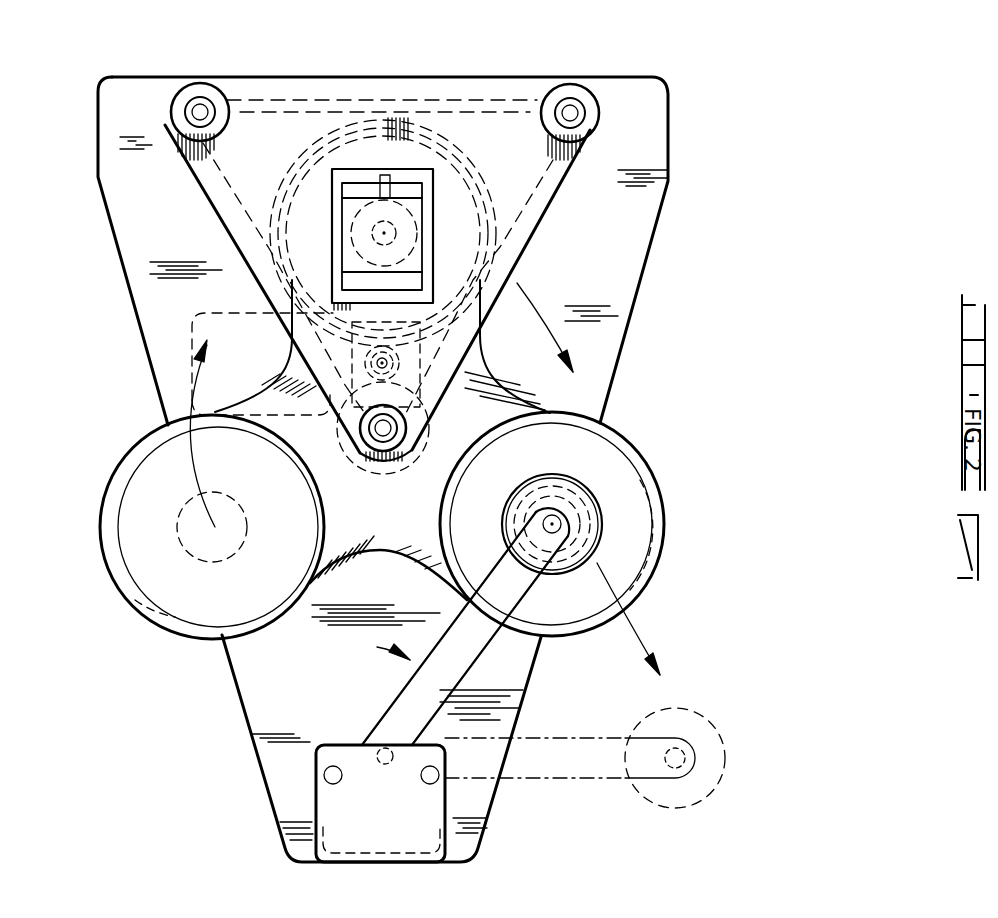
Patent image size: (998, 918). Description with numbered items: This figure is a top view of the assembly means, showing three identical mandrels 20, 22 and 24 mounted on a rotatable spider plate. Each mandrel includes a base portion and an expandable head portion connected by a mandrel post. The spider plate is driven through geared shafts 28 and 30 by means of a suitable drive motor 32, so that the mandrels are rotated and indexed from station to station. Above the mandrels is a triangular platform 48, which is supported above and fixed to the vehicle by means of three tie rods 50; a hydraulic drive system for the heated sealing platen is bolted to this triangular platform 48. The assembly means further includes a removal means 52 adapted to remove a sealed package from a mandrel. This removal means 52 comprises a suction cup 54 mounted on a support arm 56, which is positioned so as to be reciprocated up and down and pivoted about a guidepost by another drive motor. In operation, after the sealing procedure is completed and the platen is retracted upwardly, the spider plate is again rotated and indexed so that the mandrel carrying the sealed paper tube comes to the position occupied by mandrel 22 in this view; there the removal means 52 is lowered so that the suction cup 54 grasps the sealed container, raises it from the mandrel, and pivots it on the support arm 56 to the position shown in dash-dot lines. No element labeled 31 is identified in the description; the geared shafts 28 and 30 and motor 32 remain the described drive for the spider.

The mandrel 20 is at (434, 238).
The mandrel 22 is at (552, 543).
The mandrel 24 is at (262, 528).
The geared shaft 28 is at (400, 363).
The geared shaft 30 is at (398, 470).
The cover 31 is at (237, 313).
The drive motor 32 is at (383, 469).
The triangular platform 48 is at (540, 229).
The tie rods 50 is at (570, 112).
The removal means 52 is at (573, 778).
The suction cup 54 is at (384, 764).
The support arm 56 is at (468, 657).